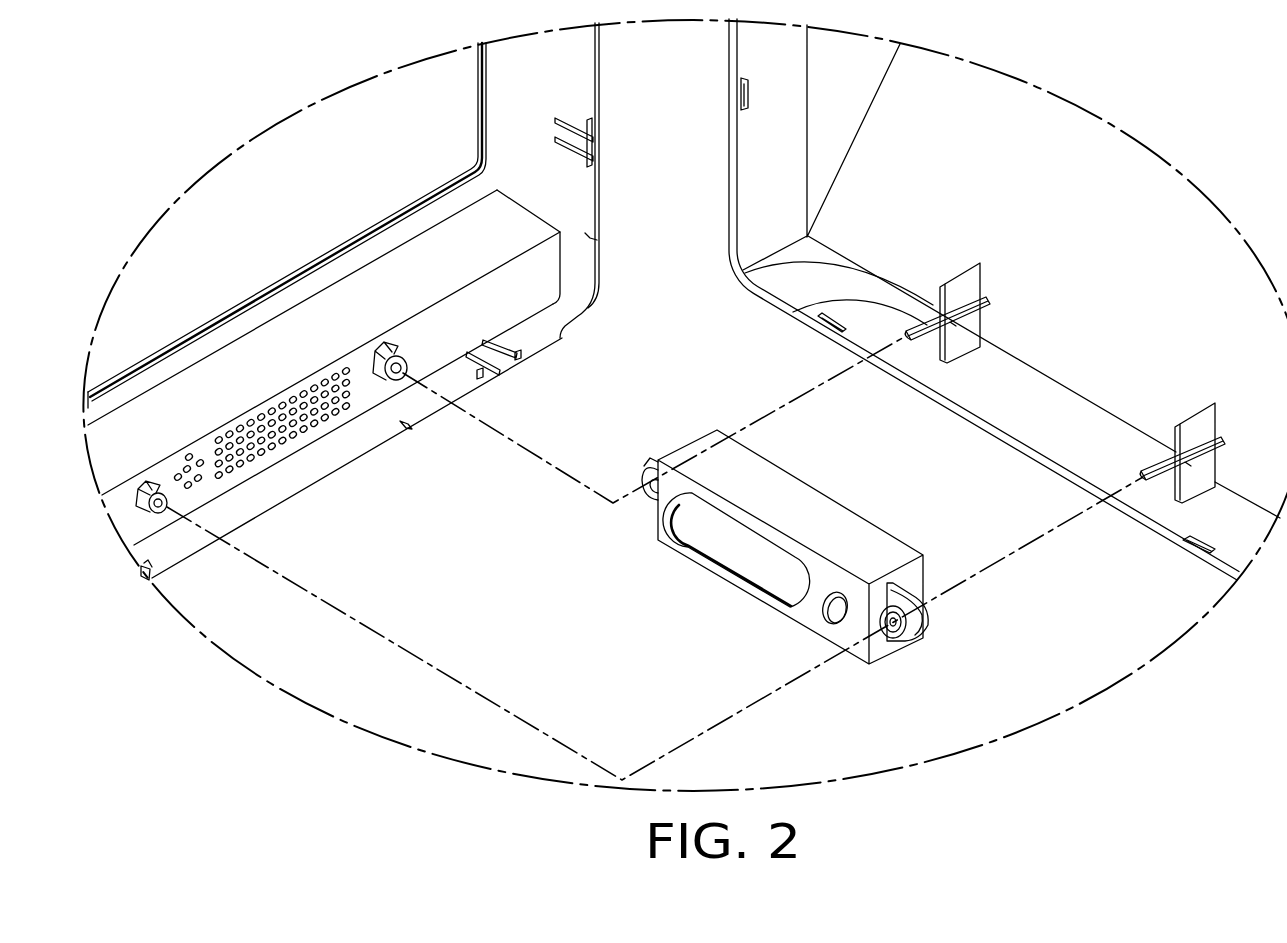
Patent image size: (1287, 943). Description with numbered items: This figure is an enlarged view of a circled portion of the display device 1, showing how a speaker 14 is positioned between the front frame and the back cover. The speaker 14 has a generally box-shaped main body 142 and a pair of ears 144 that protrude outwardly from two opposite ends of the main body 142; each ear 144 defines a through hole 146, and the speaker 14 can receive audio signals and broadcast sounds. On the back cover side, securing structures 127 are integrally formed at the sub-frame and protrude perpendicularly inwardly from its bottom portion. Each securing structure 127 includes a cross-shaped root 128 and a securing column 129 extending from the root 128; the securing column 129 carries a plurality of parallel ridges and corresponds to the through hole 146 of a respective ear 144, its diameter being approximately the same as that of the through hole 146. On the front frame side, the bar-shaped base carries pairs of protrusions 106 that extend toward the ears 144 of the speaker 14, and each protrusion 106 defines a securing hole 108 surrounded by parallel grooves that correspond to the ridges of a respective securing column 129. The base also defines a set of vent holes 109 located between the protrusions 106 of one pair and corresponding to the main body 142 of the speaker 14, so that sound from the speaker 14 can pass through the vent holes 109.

The display device 1 is at (266, 93).
The protrusion 106 is at (377, 378).
The securing hole 108 is at (393, 380).
The vent holes 109 is at (233, 472).
The securing structure 127 is at (698, 353).
The cross-shaped root 128 is at (746, 273).
The securing column 129 is at (793, 312).
The speaker 14 is at (723, 543).
The main body 142 is at (830, 528).
The ear 144 is at (916, 624).
The through hole 146 is at (912, 642).